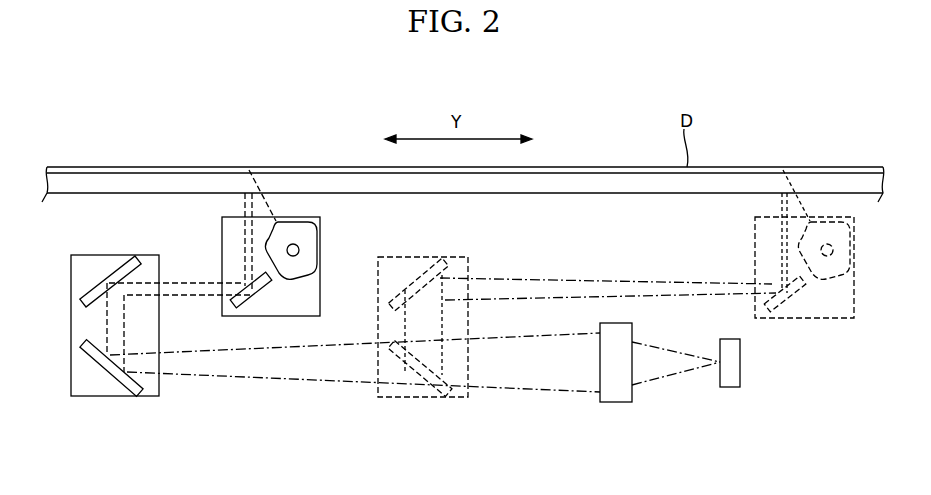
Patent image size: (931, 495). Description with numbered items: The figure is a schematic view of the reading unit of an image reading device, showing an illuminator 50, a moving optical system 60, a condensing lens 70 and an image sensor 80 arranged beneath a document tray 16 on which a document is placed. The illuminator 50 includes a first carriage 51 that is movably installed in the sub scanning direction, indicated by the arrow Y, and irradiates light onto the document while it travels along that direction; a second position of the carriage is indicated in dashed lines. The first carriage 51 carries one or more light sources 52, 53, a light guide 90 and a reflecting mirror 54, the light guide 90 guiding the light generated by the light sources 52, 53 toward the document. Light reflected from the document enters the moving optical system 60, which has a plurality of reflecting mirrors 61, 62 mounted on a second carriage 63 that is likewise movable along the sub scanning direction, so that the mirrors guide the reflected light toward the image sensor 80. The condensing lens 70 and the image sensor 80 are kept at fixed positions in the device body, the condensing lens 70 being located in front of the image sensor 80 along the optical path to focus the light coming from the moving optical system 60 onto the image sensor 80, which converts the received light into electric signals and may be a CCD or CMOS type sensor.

The document tray 16 is at (162, 167).
The illuminator 50 is at (314, 270).
The first carriage 51 is at (320, 283).
The light source 52 is at (347, 246).
The light source 53 is at (299, 249).
The reflecting mirror 54 is at (253, 301).
The moving optical system 60 is at (87, 356).
The reflecting mirror 61 is at (103, 272).
The reflecting mirror 62 is at (120, 382).
The second carriage 63 is at (71, 322).
The condensing lens 70 is at (615, 403).
The image sensor 80 is at (732, 388).
The light guide 90 is at (315, 227).